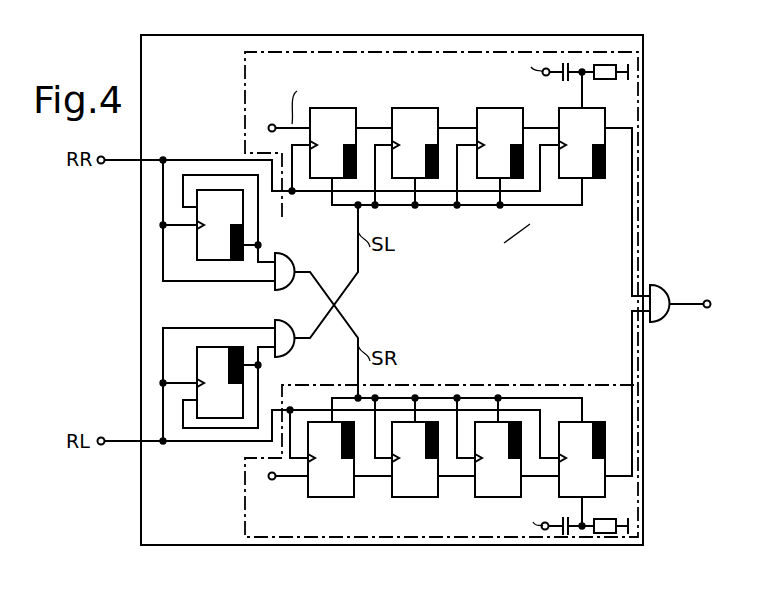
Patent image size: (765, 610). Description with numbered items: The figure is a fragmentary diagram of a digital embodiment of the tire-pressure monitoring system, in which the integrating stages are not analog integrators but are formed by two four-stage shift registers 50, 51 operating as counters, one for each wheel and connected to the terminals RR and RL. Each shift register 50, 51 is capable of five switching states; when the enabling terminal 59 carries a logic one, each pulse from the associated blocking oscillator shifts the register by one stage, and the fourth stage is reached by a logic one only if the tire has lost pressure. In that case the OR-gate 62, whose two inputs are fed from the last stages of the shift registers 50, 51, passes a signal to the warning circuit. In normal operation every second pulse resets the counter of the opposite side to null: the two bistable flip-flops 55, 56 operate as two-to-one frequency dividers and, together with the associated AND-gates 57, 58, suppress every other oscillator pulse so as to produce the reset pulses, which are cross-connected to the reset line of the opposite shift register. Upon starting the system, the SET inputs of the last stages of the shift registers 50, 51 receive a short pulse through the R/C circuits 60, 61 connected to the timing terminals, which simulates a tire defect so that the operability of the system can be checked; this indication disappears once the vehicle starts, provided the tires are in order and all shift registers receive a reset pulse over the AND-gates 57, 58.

The four-stage shift register 50 is at (530, 218).
The four-stage shift register 51 is at (480, 385).
The bistable flip-flop 55 is at (196, 251).
The bistable flip-flop 56 is at (197, 376).
The AND-gate 57 is at (286, 262).
The AND-gate 58 is at (287, 356).
The enabling terminal 59 is at (272, 124).
The R/C circuit 60 is at (600, 91).
The R/C circuit 61 is at (598, 516).
The OR-gate 62 is at (668, 291).